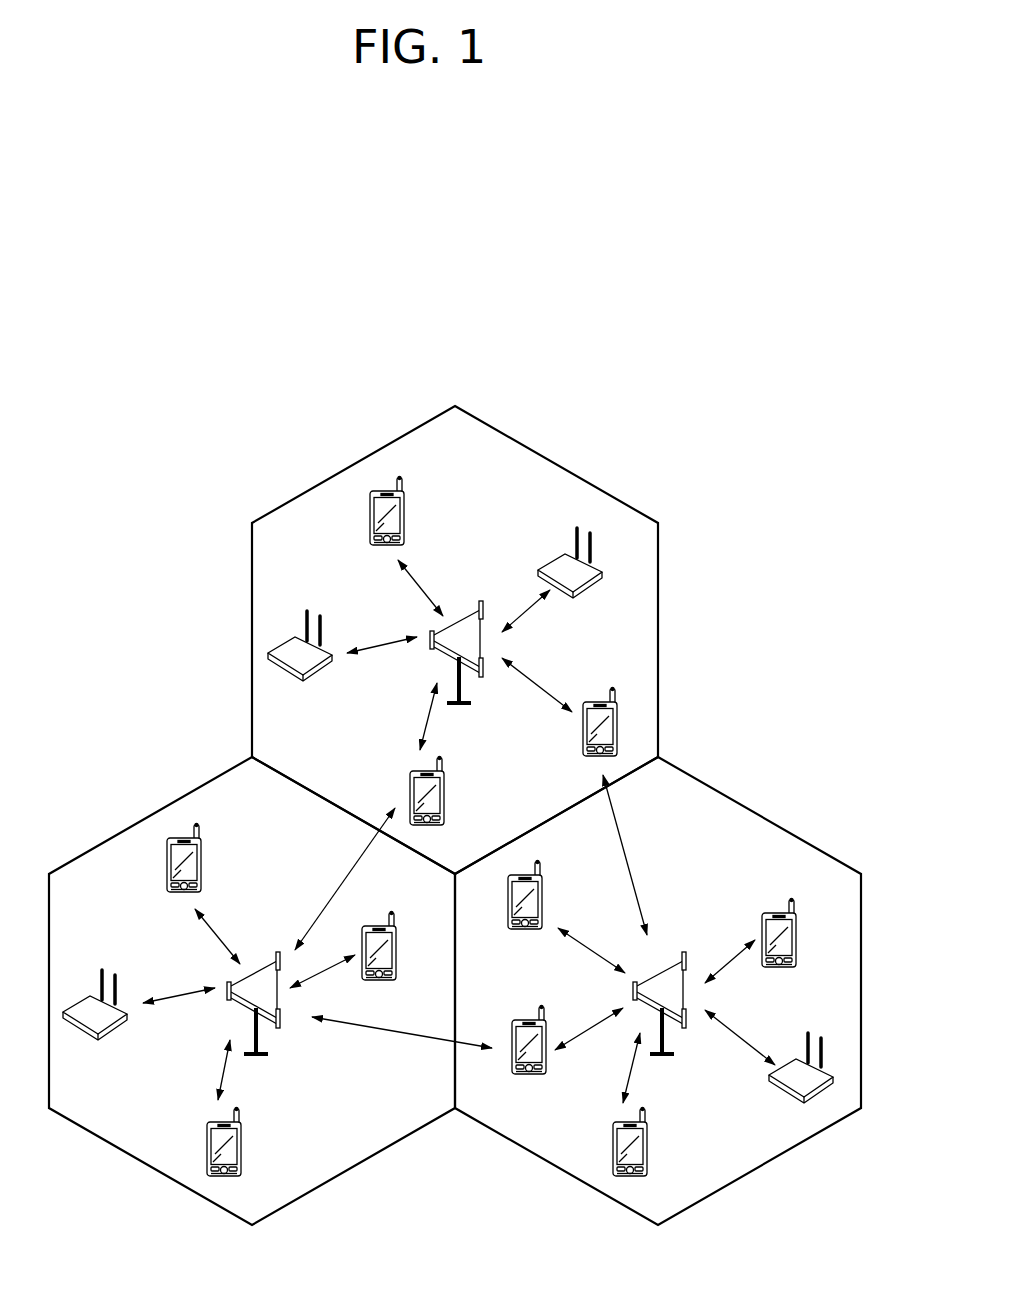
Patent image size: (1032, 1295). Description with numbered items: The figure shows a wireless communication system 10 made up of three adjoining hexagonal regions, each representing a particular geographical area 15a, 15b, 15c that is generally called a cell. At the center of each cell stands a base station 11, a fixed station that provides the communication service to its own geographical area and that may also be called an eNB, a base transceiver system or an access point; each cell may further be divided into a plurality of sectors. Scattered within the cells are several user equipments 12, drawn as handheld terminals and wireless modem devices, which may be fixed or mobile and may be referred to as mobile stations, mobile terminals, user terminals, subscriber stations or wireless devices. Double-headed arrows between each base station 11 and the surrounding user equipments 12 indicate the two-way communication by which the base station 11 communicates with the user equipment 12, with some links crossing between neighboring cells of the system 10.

The wireless communication system 10 is at (455, 815).
The base station 11 is at (470, 614).
The user equipment 12 is at (404, 515).
The geographical area 15a is at (658, 630).
The geographical area 15b is at (785, 830).
The geographical area 15c is at (120, 833).